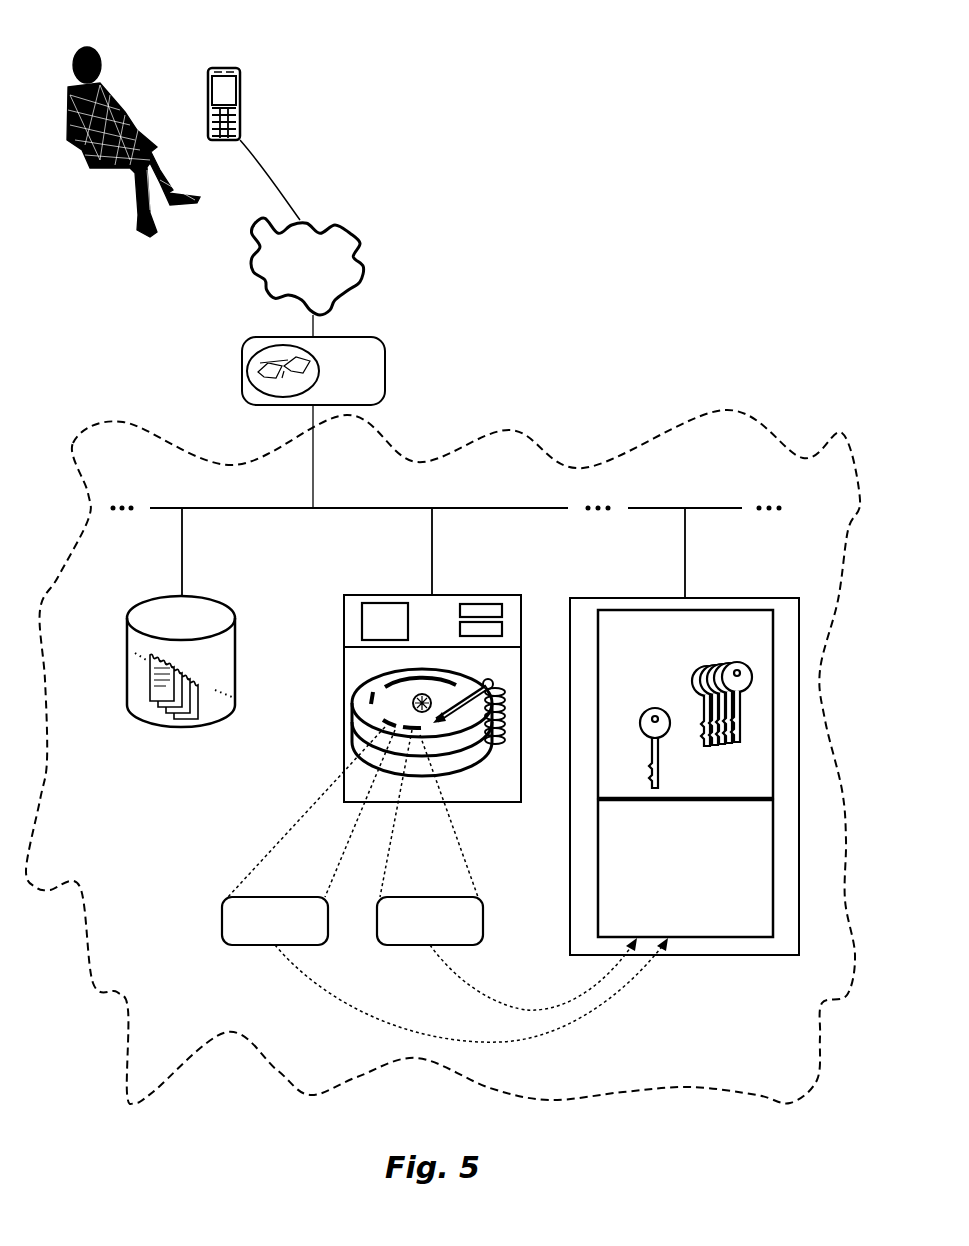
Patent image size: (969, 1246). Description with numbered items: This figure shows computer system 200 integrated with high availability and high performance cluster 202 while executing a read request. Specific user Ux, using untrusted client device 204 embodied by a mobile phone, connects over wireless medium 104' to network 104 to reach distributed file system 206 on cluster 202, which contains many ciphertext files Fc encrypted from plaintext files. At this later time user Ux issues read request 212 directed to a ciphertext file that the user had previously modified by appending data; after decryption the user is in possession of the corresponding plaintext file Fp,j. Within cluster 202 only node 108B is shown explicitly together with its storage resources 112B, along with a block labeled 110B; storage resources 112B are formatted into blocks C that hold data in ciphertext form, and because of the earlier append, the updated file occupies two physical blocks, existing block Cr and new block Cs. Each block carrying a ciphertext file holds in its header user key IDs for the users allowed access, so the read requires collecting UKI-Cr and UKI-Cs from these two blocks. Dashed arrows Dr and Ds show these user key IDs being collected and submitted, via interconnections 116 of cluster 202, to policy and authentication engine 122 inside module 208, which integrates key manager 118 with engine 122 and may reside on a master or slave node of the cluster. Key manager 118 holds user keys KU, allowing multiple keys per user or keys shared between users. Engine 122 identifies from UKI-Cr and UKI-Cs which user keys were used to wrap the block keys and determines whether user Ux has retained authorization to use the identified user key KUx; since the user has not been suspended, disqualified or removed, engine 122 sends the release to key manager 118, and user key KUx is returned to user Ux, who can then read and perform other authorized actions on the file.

The specific user Ux is at (97, 50).
The untrusted client device 204 is at (222, 67).
The wireless medium 104' is at (299, 180).
The network 104 is at (307, 266).
The computer system 200 is at (700, 222).
The read request 212 is at (243, 345).
The plaintext file Fp,j is at (352, 376).
The high availability and high performance cluster 202 is at (137, 422).
The interconnections 116 is at (342, 507).
The distributed file system 206 is at (200, 630).
The ciphertext files Fc is at (154, 706).
The storage controller 110B is at (385, 603).
The node 108B is at (475, 603).
The storage resources 112B is at (381, 711).
The blocks C is at (400, 711).
The block Cr is at (366, 740).
The new block Cs is at (417, 740).
The user key ID for block Cr UKI-Cr is at (275, 921).
The user key ID for block Cs UKI-Cs is at (430, 921).
The dashed arrow Dr is at (590, 1027).
The dashed arrow Ds is at (542, 1008).
The module 208 is at (684, 750).
The key manager 118 is at (685, 704).
The user keys KU is at (718, 657).
The user key KUx is at (639, 724).
The policy and authentication engine 122 is at (765, 830).